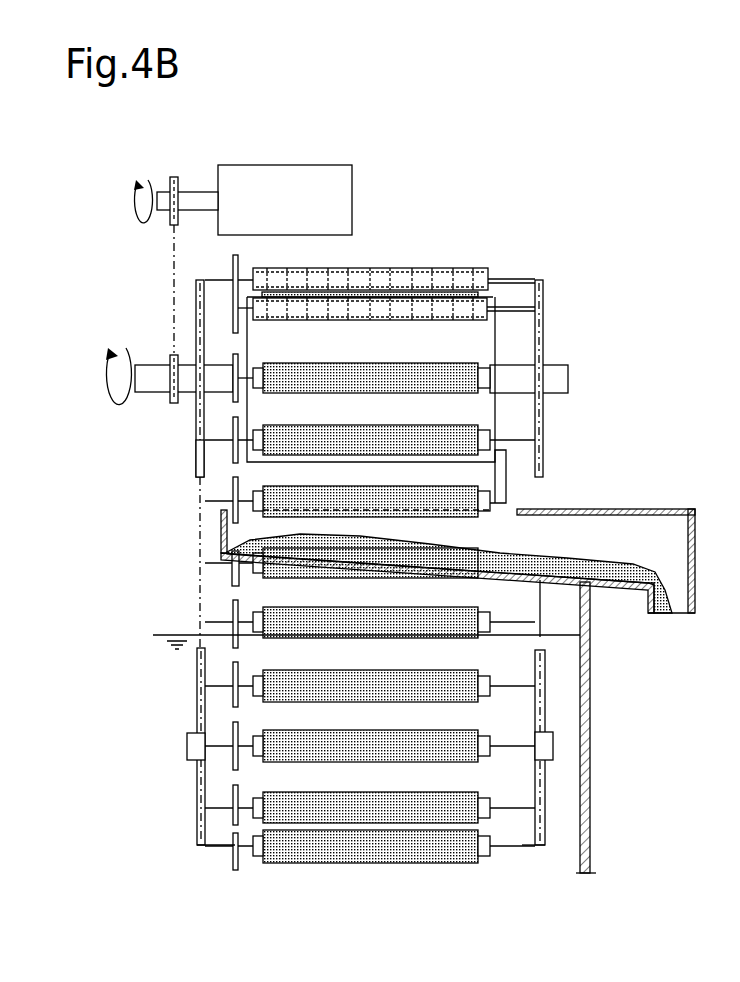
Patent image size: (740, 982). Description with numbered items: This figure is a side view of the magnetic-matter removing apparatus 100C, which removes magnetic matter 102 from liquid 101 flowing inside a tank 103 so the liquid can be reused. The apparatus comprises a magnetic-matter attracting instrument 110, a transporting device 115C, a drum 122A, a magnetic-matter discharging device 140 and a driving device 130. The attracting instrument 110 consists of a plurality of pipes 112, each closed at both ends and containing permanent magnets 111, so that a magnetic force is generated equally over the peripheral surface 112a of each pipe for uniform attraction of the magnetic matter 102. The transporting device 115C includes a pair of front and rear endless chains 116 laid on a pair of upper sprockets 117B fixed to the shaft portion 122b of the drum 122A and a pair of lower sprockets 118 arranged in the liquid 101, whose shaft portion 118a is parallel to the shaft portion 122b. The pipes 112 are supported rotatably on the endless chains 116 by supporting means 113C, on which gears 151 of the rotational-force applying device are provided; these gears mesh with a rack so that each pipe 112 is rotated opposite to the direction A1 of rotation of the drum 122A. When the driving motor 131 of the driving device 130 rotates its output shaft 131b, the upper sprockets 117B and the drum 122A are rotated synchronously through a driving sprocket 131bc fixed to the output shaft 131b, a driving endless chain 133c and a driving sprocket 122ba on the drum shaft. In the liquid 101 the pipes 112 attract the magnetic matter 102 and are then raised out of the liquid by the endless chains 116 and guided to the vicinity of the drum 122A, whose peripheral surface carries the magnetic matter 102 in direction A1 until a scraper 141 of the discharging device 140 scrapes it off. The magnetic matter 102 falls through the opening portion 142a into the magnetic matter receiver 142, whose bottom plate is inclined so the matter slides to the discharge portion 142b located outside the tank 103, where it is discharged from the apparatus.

The magnetic-matter removing apparatus 100C is at (707, 98).
The magnetic-matter attracting instrument 110 is at (511, 166).
The driving device 130 is at (152, 159).
The driving motor 131 is at (287, 158).
The output shaft 131b is at (200, 190).
The driving sprocket 131bc is at (172, 224).
The driving endless chain 133c is at (172, 280).
The direction of rotation of the drum A1 is at (137, 190).
The upper sprockets 117B is at (196, 325).
The transporting device 115C is at (410, 200).
The pipes 112 is at (486, 264).
The peripheral surface of the pipe 112a is at (420, 268).
The permanent magnets 111 is at (465, 280).
The shaft portion of the drum 122b is at (172, 405).
The driving sprocket 122ba is at (197, 448).
The drum 122A is at (508, 415).
The scraper 141 is at (233, 474).
The magnetic matter 102 is at (265, 533).
The gears 151 is at (236, 570).
The endless chains 116 is at (490, 510).
The magnetic-matter discharging device 140 is at (631, 450).
The magnetic matter receiver 142 is at (655, 503).
The opening portion 142a is at (505, 513).
The discharge portion 142b is at (680, 614).
The liquid 101 is at (560, 653).
The tank 103 is at (591, 737).
The lower sprockets 118 is at (197, 790).
The shaft portion of the lower sprockets 118a is at (187, 745).
The supporting means 113C is at (227, 848).